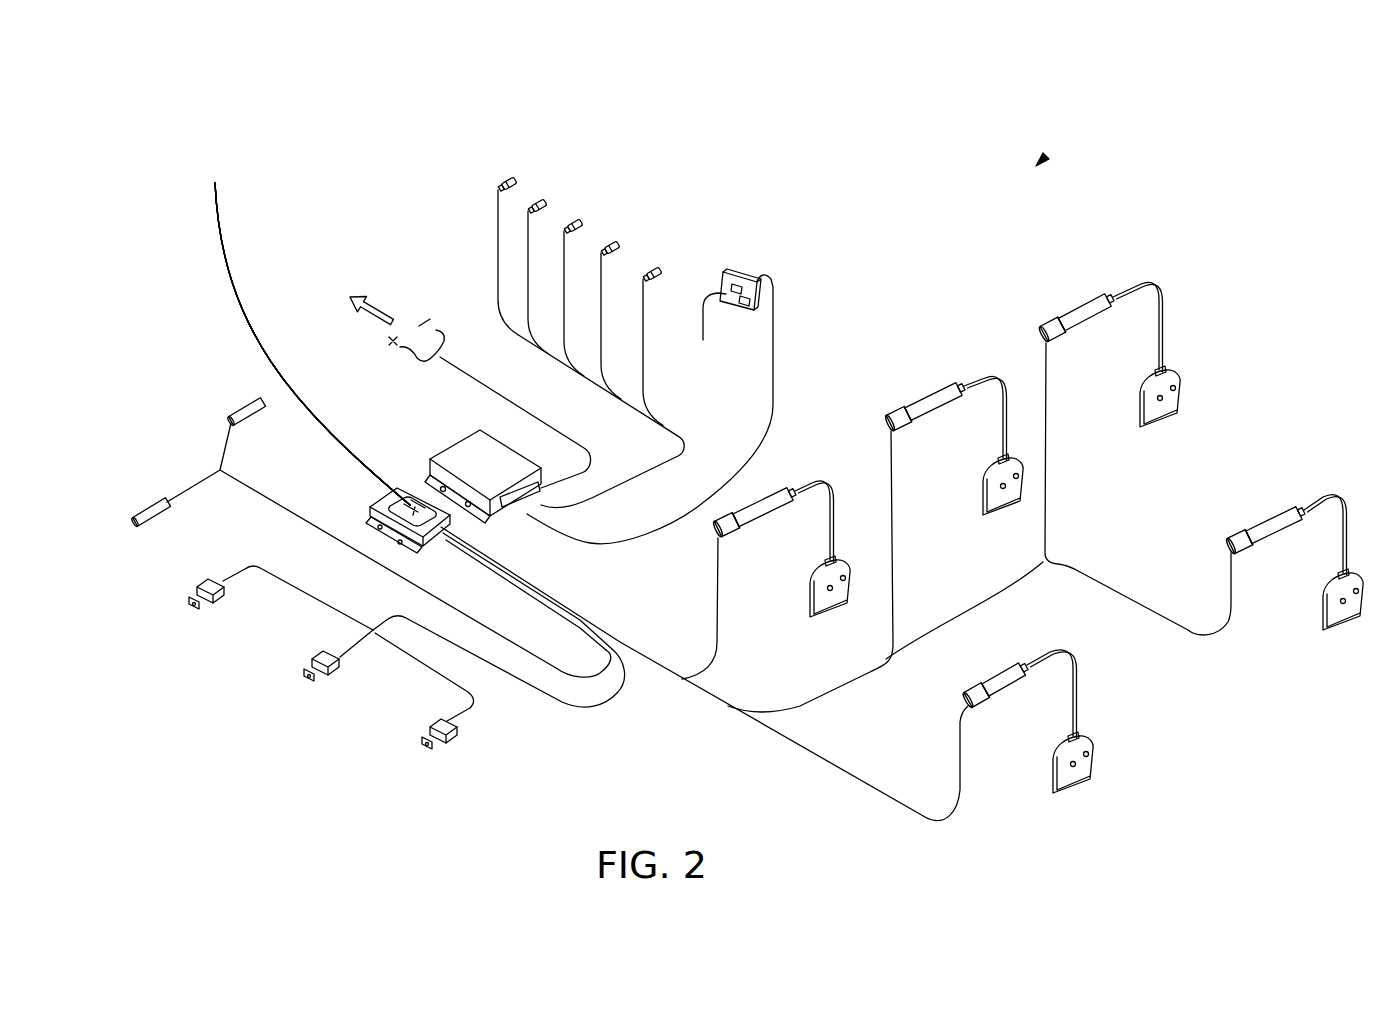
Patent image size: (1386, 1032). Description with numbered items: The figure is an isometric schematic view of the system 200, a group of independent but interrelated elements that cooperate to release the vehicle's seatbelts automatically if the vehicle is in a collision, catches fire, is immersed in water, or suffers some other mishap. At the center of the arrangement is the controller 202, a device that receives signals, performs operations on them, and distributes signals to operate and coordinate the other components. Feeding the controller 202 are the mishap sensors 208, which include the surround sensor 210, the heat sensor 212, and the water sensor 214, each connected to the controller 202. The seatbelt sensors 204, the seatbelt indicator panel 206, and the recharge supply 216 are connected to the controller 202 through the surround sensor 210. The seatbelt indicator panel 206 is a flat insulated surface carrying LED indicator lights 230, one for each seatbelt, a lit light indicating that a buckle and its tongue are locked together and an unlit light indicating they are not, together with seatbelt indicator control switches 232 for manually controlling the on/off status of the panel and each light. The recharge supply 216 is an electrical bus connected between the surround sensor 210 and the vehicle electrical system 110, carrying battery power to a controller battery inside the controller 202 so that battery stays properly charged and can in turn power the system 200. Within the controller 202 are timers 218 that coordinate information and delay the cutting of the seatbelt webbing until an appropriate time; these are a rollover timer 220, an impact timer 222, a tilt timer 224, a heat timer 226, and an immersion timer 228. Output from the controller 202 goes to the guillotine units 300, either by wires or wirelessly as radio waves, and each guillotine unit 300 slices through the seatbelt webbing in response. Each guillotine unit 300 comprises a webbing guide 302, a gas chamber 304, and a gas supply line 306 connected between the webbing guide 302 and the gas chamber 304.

The vehicle electrical system 110 is at (334, 260).
The system 200 is at (1046, 156).
The controller 202 is at (371, 506).
The seatbelt sensors 204 is at (507, 173).
The seatbelt indicator panel 206 is at (742, 272).
The mishap sensors 208 is at (221, 606).
The surround sensor 210 is at (455, 445).
The heat sensor 212 is at (444, 741).
The water sensor 214 is at (132, 522).
The recharge supply 216 is at (481, 383).
The timers 218 is at (301, 319).
The rollover timer 220 is at (167, 244).
The impact timer 222 is at (253, 300).
The tilt timer 224 is at (253, 319).
The heat timer 226 is at (253, 339).
The immersion timer 228 is at (253, 344).
The LED indicator lights 230 is at (712, 273).
The seatbelt indicator control switches 232 is at (700, 335).
The guillotine unit 300 is at (1062, 771).
The webbing guide 302 is at (1091, 757).
The gas chamber 304 is at (987, 707).
The gas supply line 306 is at (1077, 698).